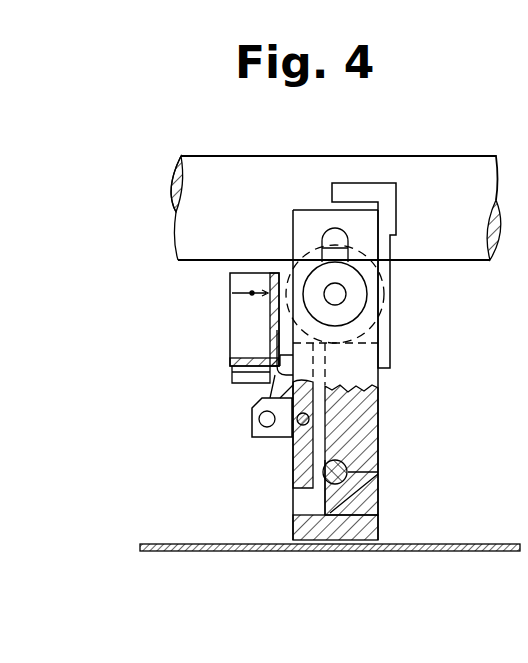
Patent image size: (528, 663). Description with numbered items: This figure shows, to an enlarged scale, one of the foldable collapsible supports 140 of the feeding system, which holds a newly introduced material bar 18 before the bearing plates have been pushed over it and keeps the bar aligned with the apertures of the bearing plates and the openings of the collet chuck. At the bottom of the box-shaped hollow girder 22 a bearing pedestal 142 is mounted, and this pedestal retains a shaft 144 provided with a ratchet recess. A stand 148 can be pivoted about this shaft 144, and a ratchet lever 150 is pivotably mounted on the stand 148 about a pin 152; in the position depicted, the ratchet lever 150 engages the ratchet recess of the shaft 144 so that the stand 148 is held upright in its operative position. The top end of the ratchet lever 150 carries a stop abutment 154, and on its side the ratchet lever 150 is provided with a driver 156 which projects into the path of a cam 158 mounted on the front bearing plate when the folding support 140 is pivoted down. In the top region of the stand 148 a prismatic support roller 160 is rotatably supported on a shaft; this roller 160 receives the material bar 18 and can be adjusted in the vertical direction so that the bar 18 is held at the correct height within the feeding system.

The material bar 18 is at (427, 167).
The hollow girder 22 is at (448, 553).
The collapsible support 140 is at (212, 311).
The bearing pedestal 142 is at (365, 530).
The shaft 144 is at (360, 473).
The stand 148 is at (353, 415).
The ratchet lever 150 is at (298, 463).
The pin 152 is at (252, 440).
The stop abutment 154 is at (245, 370).
The driver 156 is at (259, 420).
The cam 158 is at (250, 395).
The prismatic support roller 160 is at (491, 378).